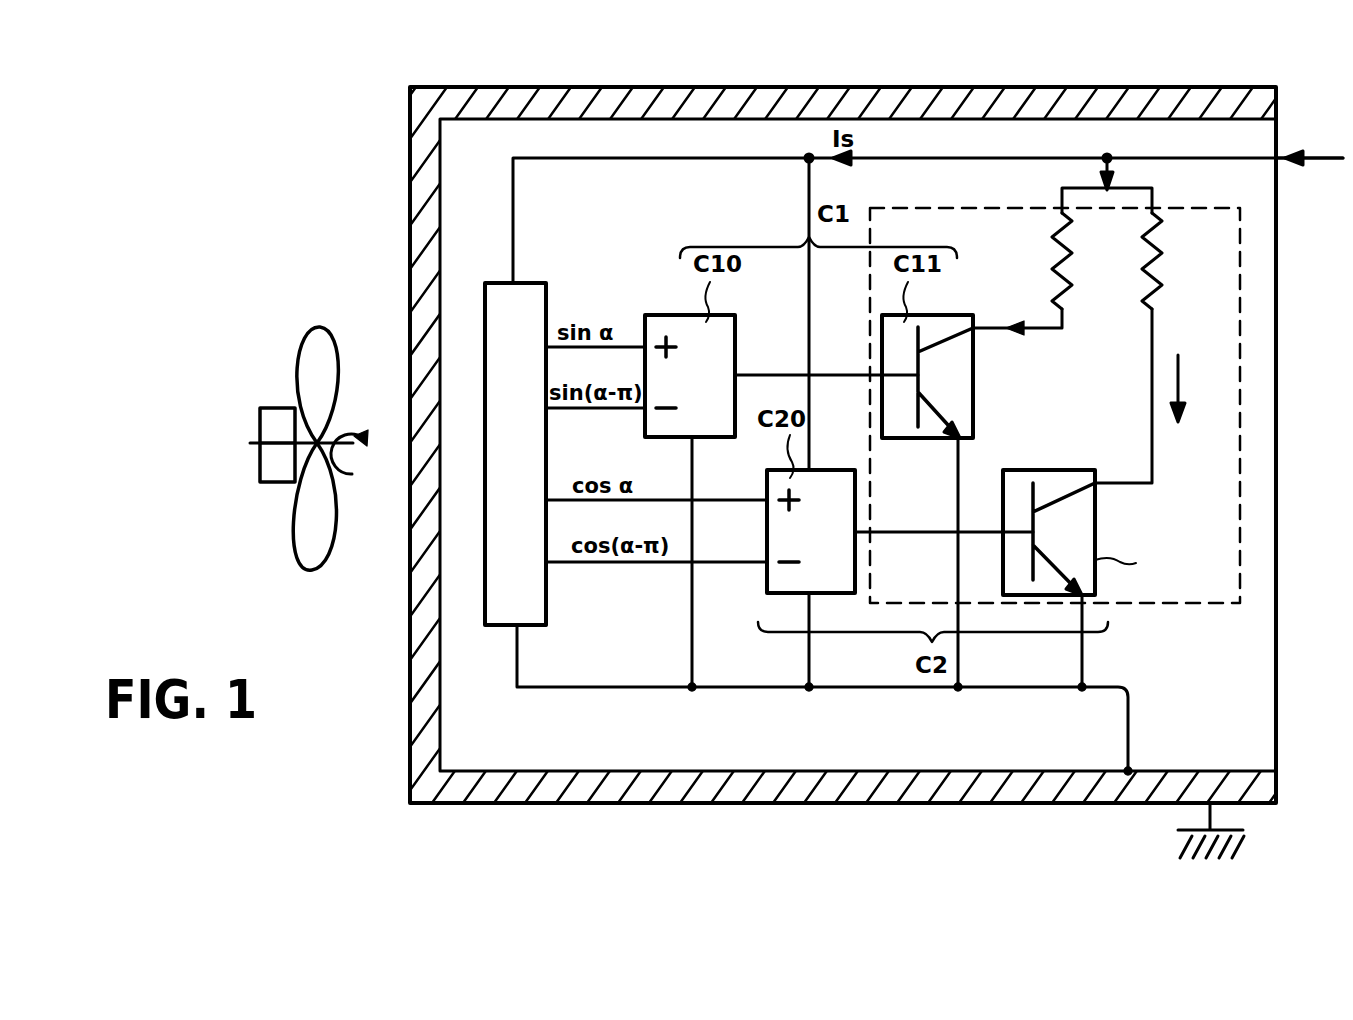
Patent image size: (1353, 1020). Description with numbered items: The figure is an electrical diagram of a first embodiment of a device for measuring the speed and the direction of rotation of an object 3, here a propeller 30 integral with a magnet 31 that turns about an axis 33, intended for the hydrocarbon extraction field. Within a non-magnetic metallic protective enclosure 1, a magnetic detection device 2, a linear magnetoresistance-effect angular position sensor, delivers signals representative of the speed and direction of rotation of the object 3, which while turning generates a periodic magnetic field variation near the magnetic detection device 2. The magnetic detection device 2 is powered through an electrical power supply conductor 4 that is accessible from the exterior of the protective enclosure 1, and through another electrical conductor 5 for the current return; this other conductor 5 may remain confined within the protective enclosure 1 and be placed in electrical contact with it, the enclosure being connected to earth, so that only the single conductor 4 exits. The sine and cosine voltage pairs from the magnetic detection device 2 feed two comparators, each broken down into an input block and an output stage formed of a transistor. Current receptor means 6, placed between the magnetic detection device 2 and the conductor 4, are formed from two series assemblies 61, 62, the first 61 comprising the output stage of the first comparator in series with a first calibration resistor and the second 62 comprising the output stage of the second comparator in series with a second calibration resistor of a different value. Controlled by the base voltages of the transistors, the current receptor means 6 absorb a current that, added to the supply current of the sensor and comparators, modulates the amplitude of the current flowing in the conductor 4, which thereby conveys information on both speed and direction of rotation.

The protective enclosure 1 is at (1045, 790).
The magnetic detection device 2 is at (530, 585).
The object 3 is at (298, 492).
The electrical power supply conductor 4 is at (1310, 152).
The other electrical conductor 5 is at (878, 690).
The current receptor means 6 is at (1055, 416).
The propeller 30 is at (312, 558).
The magnet 31 is at (264, 483).
The rotation axis 33 is at (326, 436).
The first series assembly 61 is at (1000, 340).
The second series assembly 62 is at (1142, 365).